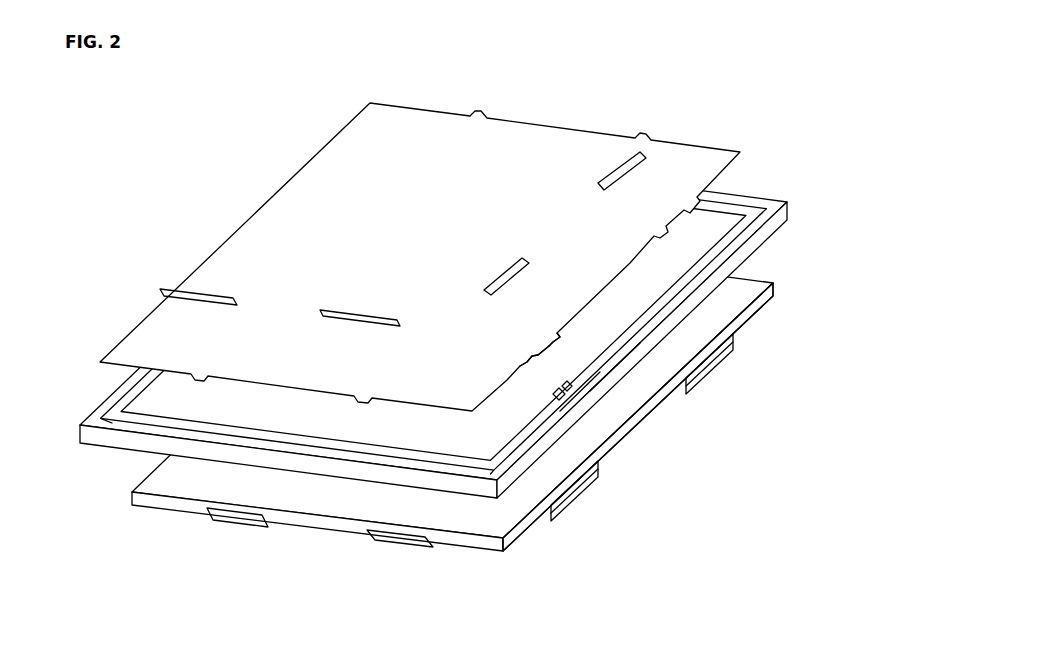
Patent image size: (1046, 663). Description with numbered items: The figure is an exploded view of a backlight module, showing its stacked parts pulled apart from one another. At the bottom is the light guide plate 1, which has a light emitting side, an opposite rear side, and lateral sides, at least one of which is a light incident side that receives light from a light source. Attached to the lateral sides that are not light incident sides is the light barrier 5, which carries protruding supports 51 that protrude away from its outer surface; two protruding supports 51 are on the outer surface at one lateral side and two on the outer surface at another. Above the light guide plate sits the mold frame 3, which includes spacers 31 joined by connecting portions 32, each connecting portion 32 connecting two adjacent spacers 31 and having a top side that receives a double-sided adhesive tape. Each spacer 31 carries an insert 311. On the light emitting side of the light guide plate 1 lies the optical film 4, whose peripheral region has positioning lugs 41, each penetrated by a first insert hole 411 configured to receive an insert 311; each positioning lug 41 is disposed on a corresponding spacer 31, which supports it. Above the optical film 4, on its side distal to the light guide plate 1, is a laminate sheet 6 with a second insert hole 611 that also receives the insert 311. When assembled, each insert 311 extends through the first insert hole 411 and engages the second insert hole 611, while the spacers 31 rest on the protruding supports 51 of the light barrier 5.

The light guide plate 1 is at (730, 303).
The mold frame 3 is at (787, 221).
The optical film 4 is at (670, 163).
The light barrier 5 is at (751, 317).
The laminate sheet 6 is at (600, 184).
The spacer 31 is at (568, 403).
The connecting portion 32 is at (610, 367).
The positioning lug 41 is at (559, 339).
The protruding support 51 is at (727, 352).
The insert 311 is at (557, 398).
The first insert hole 411 is at (546, 349).
The second insert hole 611 is at (508, 272).